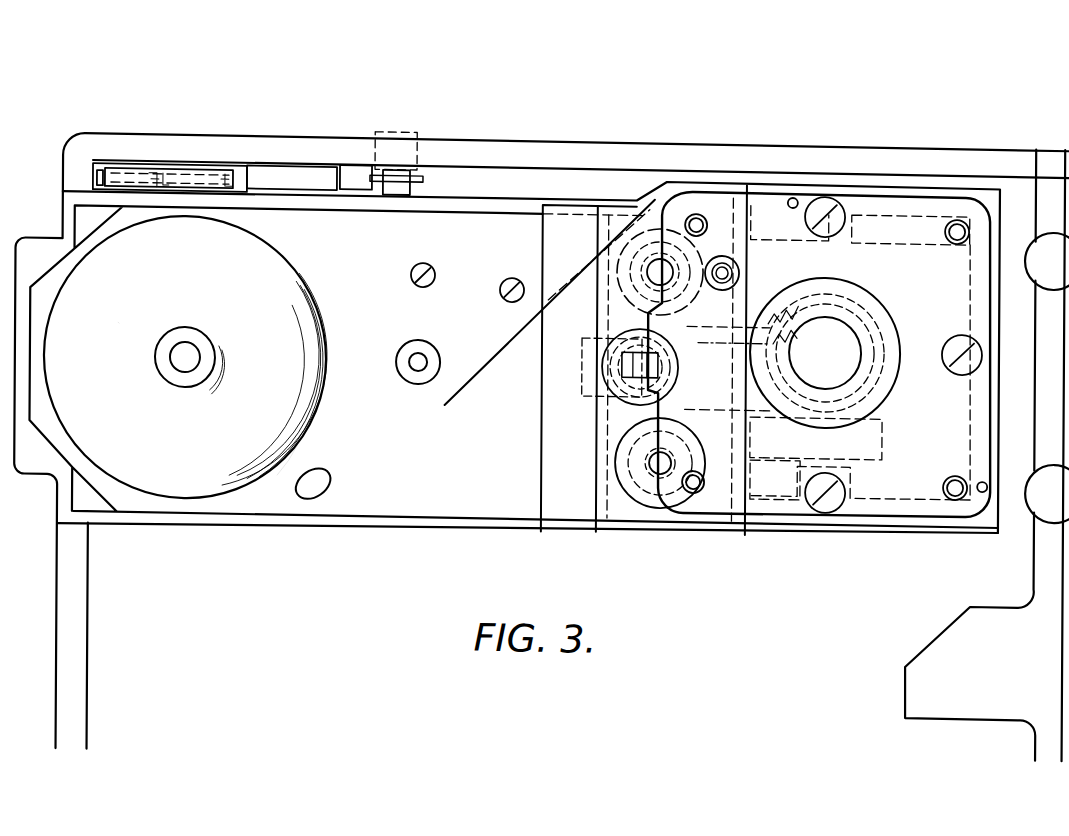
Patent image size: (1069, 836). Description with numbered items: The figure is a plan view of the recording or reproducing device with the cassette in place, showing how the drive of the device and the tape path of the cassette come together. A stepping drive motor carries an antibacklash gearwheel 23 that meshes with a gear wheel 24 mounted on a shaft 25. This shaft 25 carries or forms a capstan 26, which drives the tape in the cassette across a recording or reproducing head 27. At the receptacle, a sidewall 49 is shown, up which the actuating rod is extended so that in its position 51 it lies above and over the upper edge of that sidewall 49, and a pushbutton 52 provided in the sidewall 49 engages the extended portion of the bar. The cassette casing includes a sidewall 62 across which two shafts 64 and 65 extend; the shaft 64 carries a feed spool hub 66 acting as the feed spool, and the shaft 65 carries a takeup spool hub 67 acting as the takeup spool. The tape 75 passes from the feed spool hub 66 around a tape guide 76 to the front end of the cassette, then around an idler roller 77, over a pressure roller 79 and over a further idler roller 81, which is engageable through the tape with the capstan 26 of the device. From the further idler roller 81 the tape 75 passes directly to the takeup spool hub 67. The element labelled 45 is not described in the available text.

The antibacklash gearwheel 23 is at (867, 314).
The gear wheel 24 is at (744, 185).
The shaft 25 is at (723, 249).
The capstan 26 is at (742, 260).
The recording or reproducing head 27 is at (747, 387).
The counter strip 45 is at (191, 172).
The sidewall 49 is at (589, 141).
The position 51 is at (398, 171).
The pushbutton 52 is at (406, 126).
The sidewall 62 is at (343, 256).
The shaft 64 is at (184, 349).
The shaft 65 is at (434, 332).
The feed spool hub 66 is at (207, 339).
The takeup spool hub 67 is at (397, 351).
The tape 75 is at (306, 462).
The tape guide 76 is at (333, 484).
The idler roller 77 is at (643, 456).
The pressure roller 79 is at (587, 374).
The further idler roller 81 is at (656, 188).